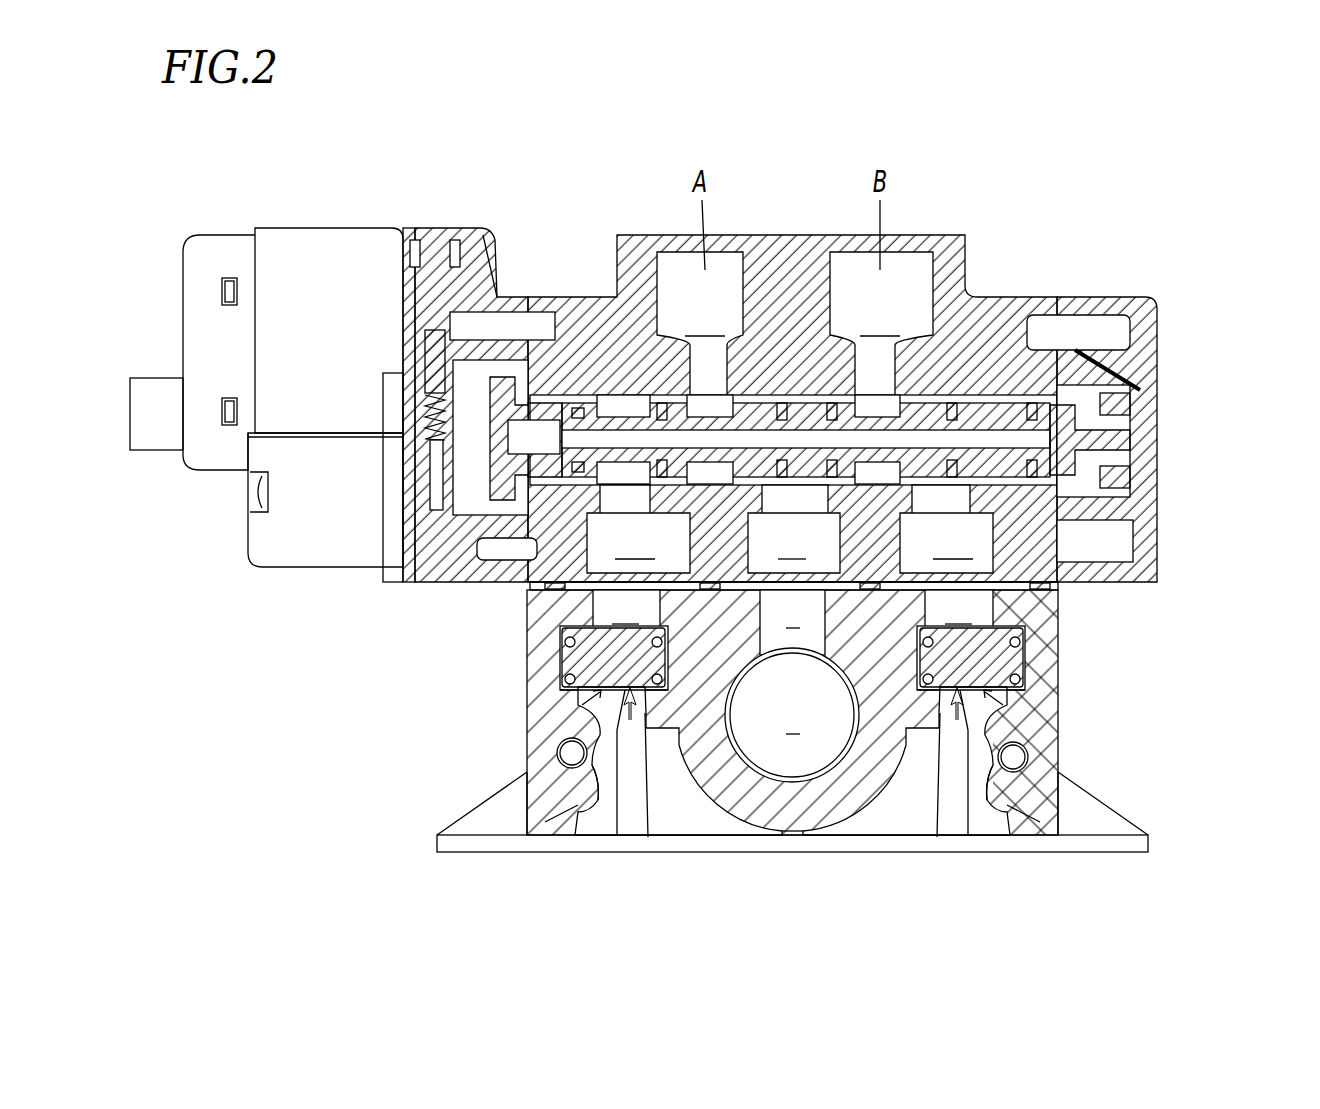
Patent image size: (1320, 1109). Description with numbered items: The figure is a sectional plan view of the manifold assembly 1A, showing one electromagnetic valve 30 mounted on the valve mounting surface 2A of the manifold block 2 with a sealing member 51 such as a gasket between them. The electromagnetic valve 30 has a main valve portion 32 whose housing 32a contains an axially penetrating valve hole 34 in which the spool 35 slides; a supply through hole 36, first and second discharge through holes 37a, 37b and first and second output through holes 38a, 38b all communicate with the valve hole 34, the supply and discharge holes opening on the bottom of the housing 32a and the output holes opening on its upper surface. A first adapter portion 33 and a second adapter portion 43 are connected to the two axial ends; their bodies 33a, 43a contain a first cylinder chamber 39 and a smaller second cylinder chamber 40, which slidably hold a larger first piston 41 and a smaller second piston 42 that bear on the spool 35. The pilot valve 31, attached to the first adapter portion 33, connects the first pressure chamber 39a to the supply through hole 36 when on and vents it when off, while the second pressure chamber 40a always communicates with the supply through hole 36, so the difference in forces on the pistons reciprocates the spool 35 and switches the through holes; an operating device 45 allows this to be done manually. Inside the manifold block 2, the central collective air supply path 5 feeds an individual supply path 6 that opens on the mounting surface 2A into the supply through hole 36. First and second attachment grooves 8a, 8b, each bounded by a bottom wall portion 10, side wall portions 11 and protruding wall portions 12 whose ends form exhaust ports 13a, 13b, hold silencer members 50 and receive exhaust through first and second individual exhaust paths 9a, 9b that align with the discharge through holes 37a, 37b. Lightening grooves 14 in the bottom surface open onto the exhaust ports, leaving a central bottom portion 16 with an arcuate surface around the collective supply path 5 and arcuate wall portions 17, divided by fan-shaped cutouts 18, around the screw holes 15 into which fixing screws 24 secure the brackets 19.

The manifold assembly 1A is at (1210, 628).
The manifold block 2 is at (797, 818).
The valve mounting surface 2A is at (1035, 583).
The collective air supply path 5 is at (792, 715).
The individual supply path 6 is at (792, 622).
The first attachment groove 8a is at (632, 735).
The second attachment groove 8b is at (955, 735).
The first individual exhaust path 9a is at (626, 608).
The second individual exhaust path 9b is at (959, 608).
The bottom wall portion 10 is at (563, 640).
The side wall portion 11 is at (563, 655).
The protruding wall portion 12 is at (587, 695).
The exhaust port 13a is at (565, 753).
The exhaust port 13b is at (1017, 760).
The lightening groove 14 is at (686, 818).
The screw hole 15 is at (555, 790).
The central bottom portion 16 is at (748, 835).
The arcuate wall portion 17 is at (580, 818).
The fan-shaped cutout 18 is at (610, 775).
The bracket 19 is at (845, 852).
The fixing screw 24 is at (528, 778).
The electromagnetic valve 30 is at (946, 173).
The pilot valve 31 is at (280, 215).
The main valve portion 32 is at (995, 290).
The housing 32a is at (1005, 350).
The first adapter portion 33 is at (470, 235).
The body 33a is at (477, 262).
The valve hole 34 is at (755, 380).
The spool 35 is at (630, 415).
The supply through hole 36 is at (794, 529).
The first discharge through hole 37a is at (638, 529).
The second discharge through hole 37b is at (946, 529).
The first output through hole 38a is at (700, 323).
The second output through hole 38b is at (881, 323).
The first cylinder chamber 39 is at (475, 513).
The first pressure chamber 39a is at (433, 378).
The second cylinder chamber 40 is at (1085, 385).
The second pressure chamber 40a is at (1130, 390).
The first piston 41 is at (500, 380).
The second piston 42 is at (1130, 470).
The second adapter portion 43 is at (1135, 290).
The body 43a is at (1140, 333).
The operating device 45 is at (420, 282).
The silencer member 50 is at (590, 668).
The sealing member 51 is at (1060, 592).